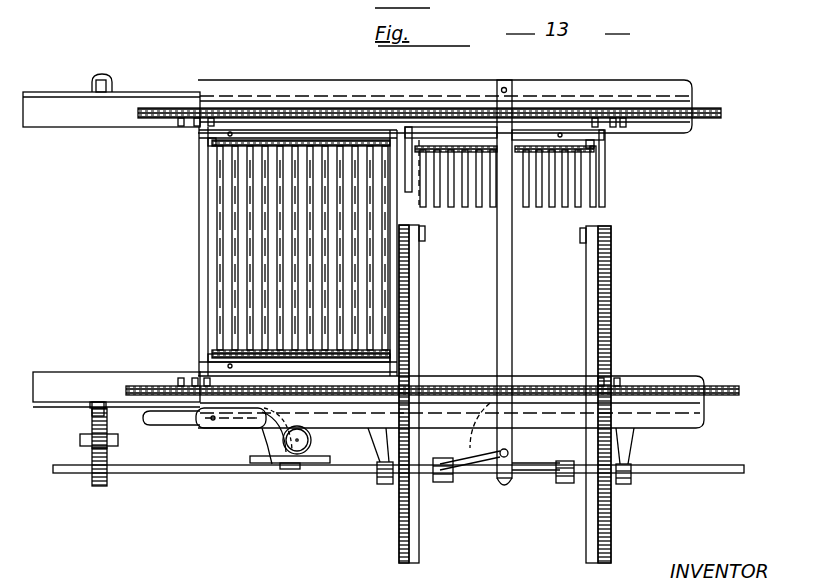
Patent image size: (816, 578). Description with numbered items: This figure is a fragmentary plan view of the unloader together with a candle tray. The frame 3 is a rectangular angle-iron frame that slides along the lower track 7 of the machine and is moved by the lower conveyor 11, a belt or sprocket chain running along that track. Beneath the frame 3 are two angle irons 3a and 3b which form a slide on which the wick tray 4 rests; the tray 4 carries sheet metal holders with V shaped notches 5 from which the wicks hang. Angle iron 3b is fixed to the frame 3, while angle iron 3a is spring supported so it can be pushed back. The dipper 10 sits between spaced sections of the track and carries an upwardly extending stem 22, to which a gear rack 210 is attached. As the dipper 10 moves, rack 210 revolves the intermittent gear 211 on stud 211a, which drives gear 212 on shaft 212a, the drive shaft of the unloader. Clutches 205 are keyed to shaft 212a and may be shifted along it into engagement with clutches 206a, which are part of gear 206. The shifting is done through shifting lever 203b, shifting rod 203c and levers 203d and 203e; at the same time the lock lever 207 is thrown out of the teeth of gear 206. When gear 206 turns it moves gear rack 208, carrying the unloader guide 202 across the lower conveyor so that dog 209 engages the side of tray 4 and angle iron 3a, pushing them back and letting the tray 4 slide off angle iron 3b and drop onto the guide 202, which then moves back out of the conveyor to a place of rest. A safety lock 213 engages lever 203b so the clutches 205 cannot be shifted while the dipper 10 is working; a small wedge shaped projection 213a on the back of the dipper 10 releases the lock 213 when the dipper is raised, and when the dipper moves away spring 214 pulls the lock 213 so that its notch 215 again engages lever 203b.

The frame 3 is at (199, 252).
The angle iron 3a is at (210, 141).
The angle iron 3b is at (230, 366).
The wick tray 4 is at (217, 158).
The V shaped notches 5 is at (240, 178).
The lower track 7 is at (692, 128).
The dipper 10 is at (78, 112).
The lower conveyor 11 is at (706, 110).
The dipper stem 22 is at (97, 84).
The unloader guide 202 is at (419, 265).
The shifting lever 203b is at (270, 466).
The shifting rod 203c is at (454, 448).
The lever 203d is at (504, 450).
The lever 203e is at (554, 466).
The clutches 205 is at (520, 466).
The gear 206 is at (388, 484).
The clutches 206a is at (442, 484).
The lock lever 207 is at (378, 462).
The gear rack 208 is at (409, 312).
The dog 209 is at (425, 234).
The gear rack 210 is at (92, 412).
The intermittent gear 211 is at (107, 428).
The stud 211a is at (80, 440).
The gear 212 is at (106, 480).
The drive shaft 212a is at (198, 470).
The safety lock 213 is at (286, 470).
The wedge shaped projection 213a is at (205, 428).
The spring 214 is at (278, 432).
The notch 215 is at (308, 454).